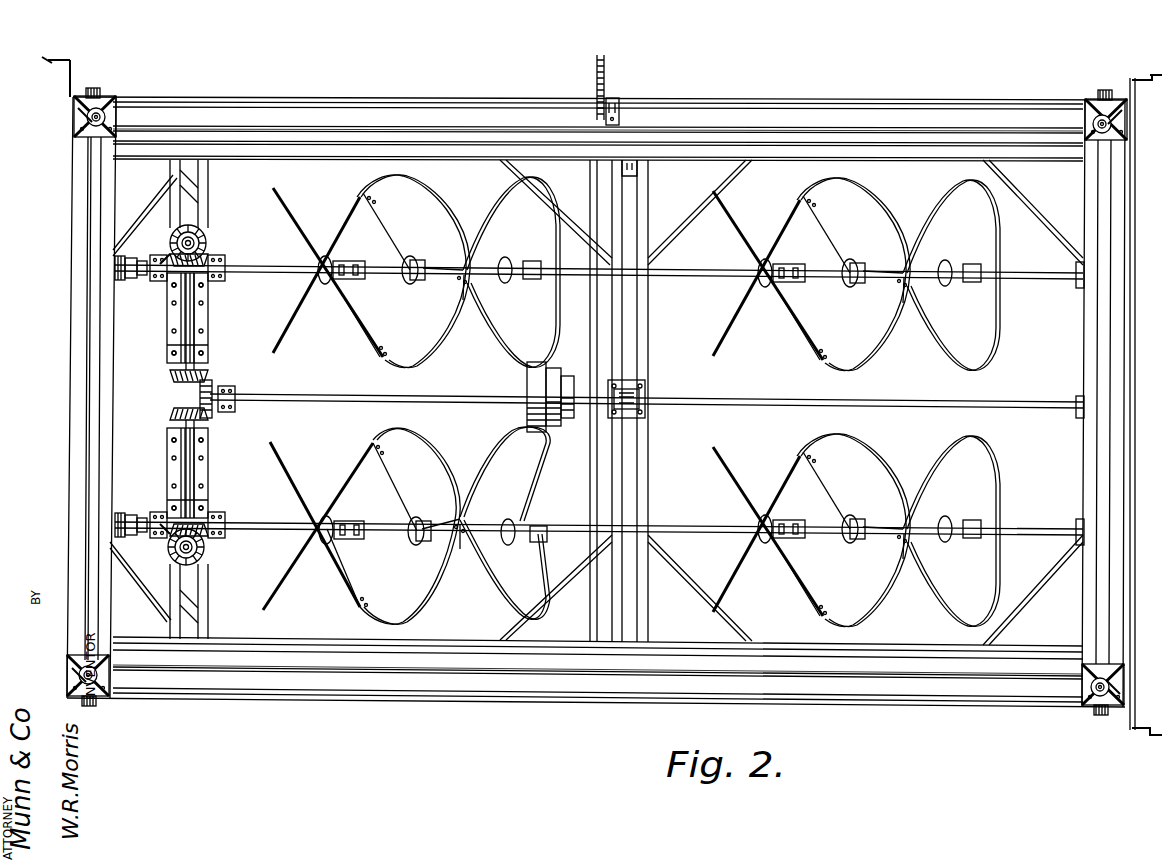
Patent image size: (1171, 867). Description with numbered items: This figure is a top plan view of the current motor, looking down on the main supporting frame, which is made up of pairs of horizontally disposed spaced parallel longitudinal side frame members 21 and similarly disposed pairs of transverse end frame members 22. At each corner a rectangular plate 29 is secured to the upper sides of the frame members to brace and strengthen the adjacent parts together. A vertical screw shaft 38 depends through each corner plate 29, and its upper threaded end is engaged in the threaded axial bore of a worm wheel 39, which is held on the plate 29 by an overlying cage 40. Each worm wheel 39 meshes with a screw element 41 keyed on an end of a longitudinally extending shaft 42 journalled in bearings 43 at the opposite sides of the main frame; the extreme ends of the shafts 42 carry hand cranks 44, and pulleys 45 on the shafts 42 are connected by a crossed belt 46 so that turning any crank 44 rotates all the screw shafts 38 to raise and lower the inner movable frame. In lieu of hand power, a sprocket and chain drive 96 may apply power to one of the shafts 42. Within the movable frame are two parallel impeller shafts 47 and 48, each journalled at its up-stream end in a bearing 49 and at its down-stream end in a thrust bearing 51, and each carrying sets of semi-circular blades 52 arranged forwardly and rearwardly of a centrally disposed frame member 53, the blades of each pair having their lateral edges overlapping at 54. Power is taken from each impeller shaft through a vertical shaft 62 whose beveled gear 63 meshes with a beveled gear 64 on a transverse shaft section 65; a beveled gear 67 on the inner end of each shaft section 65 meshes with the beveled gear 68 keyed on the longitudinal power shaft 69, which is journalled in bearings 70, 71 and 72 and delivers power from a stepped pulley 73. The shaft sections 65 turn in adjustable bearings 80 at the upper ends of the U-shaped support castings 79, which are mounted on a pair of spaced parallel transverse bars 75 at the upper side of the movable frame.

The longitudinal side frame member 21 is at (848, 140).
The transverse end frame member 22 is at (95, 412).
The rectangular plate 29 is at (88, 137).
The screw shaft 38 is at (86, 120).
The worm wheel 39 is at (78, 112).
The cage 40 is at (102, 112).
The screw element 41 is at (94, 88).
The longitudinal shaft 42 is at (430, 104).
The bearing 43 is at (612, 104).
The hand crank 44 is at (68, 84).
The pulley 45 is at (1130, 88).
The belt 46 is at (1135, 618).
The impeller shaft 47 is at (280, 536).
The impeller shaft 48 is at (278, 276).
The bearing 49 is at (1078, 286).
The thrust bearing 51 is at (140, 282).
The blade 52 is at (448, 212).
The centrally disposed frame member 53 is at (640, 370).
The overlap 54 is at (362, 196).
The vertical shaft 62 is at (204, 236).
The beveled gear 63 is at (208, 258).
The beveled gear 64 is at (172, 257).
The shaft section 65 is at (184, 328).
The beveled gear 67 is at (174, 378).
The beveled gear 68 is at (212, 385).
The power shaft 69 is at (455, 385).
The bearing 70 is at (236, 411).
The bearing 71 is at (644, 412).
The bearing 72 is at (1078, 416).
The stepped pulley 73 is at (527, 414).
The transverse bar 75 is at (172, 178).
The support casting 79 is at (208, 312).
The adjustable bearing 80 is at (176, 284).
The sprocket and chain drive 96 is at (596, 82).